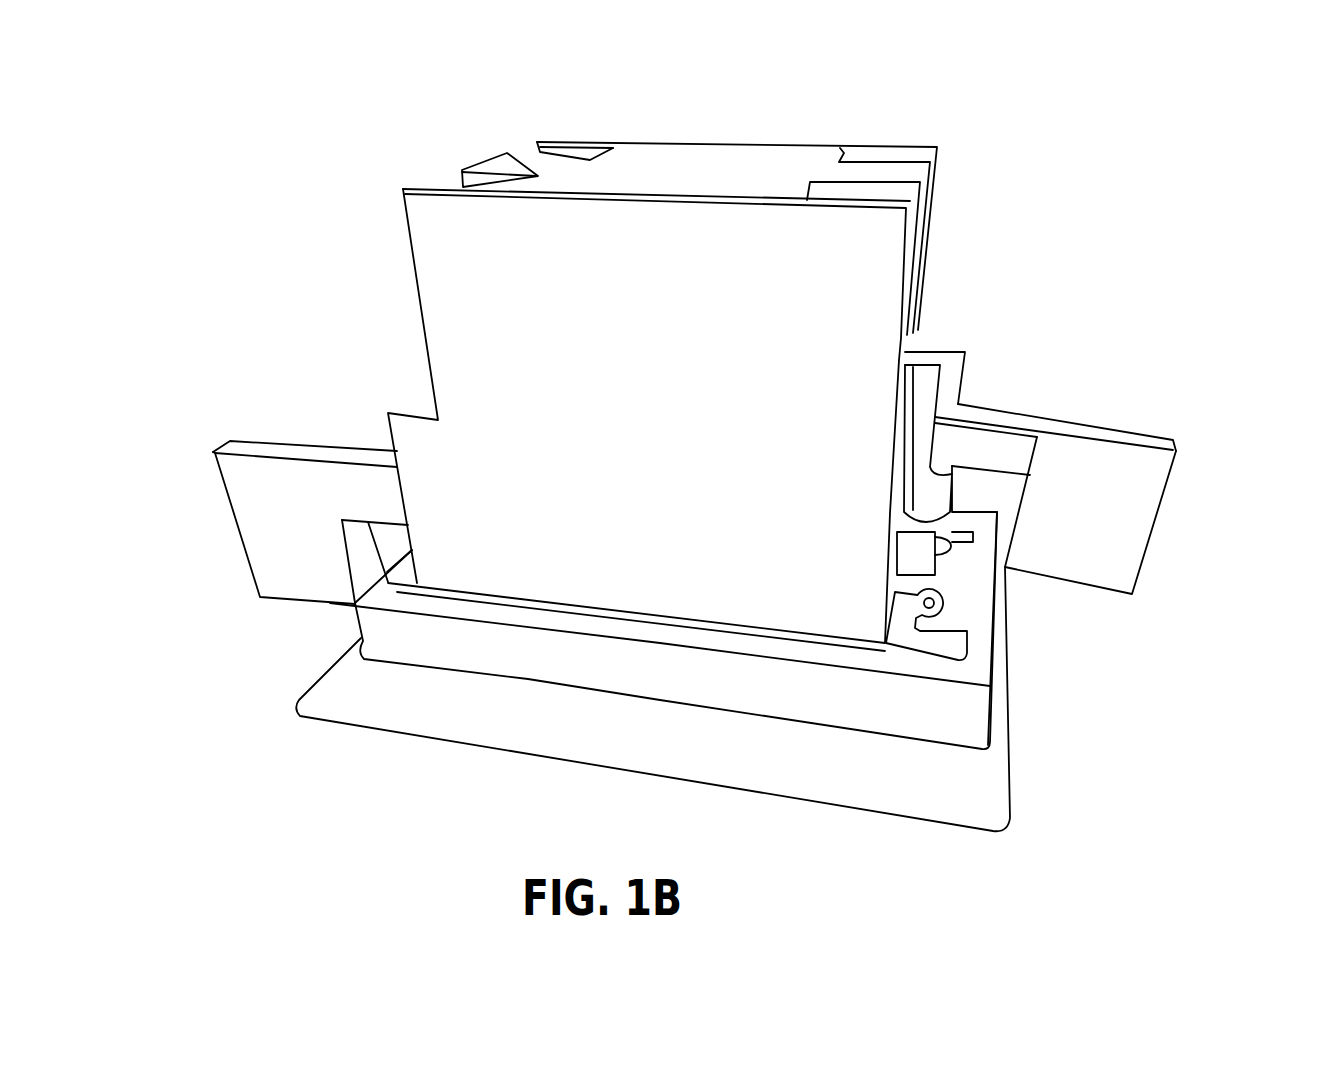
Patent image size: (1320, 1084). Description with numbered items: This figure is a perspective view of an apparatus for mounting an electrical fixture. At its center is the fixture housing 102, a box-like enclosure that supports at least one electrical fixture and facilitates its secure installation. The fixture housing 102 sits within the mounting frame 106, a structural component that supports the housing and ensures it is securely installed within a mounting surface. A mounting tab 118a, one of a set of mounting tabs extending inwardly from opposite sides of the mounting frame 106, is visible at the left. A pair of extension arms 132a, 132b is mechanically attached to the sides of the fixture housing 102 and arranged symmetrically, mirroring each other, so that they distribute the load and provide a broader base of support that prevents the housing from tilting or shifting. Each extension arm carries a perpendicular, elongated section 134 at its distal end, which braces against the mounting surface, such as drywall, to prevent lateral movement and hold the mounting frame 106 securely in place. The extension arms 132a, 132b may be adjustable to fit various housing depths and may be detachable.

The fixture housing 102 is at (497, 153).
The mounting frame 106 is at (505, 762).
The mounting tab 118a is at (270, 562).
The extension arm 132b is at (281, 472).
The extension arm 132a is at (1073, 452).
The perpendicular, elongated section 134 is at (1113, 577).